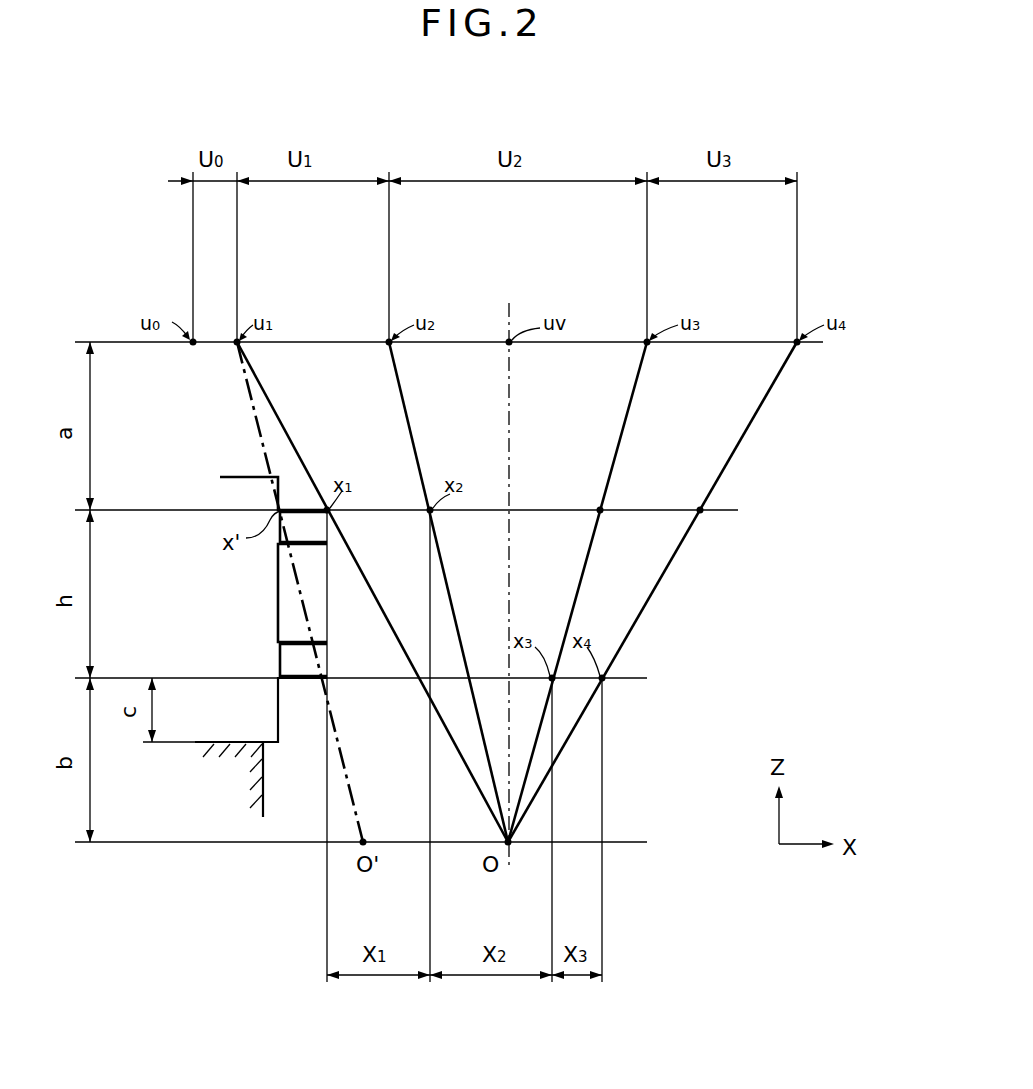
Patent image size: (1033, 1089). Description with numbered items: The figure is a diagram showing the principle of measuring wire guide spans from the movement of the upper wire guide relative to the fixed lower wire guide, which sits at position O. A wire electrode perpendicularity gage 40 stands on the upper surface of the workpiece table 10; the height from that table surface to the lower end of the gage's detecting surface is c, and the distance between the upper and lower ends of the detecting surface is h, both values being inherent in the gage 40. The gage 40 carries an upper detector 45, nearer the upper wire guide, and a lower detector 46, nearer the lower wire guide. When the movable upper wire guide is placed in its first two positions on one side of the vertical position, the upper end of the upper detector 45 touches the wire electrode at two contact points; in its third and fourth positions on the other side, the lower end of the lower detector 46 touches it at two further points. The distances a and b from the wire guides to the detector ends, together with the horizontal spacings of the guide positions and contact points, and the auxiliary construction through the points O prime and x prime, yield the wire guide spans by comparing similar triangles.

The workpiece table 10 is at (228, 785).
The wire electrode perpendicularity gage 40 is at (236, 578).
The upper detector 45 is at (302, 529).
The lower detector 46 is at (321, 660).